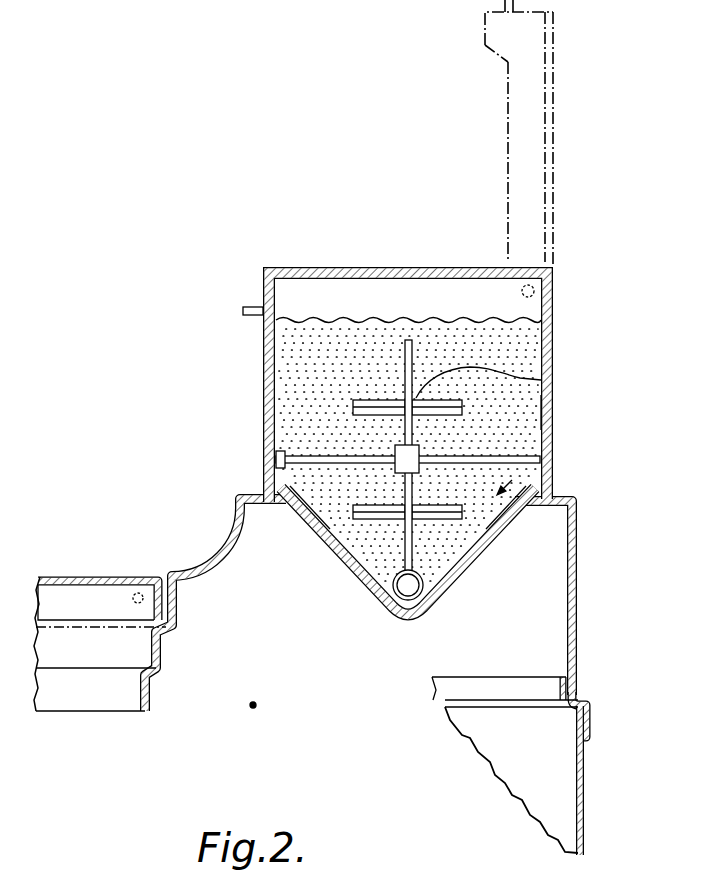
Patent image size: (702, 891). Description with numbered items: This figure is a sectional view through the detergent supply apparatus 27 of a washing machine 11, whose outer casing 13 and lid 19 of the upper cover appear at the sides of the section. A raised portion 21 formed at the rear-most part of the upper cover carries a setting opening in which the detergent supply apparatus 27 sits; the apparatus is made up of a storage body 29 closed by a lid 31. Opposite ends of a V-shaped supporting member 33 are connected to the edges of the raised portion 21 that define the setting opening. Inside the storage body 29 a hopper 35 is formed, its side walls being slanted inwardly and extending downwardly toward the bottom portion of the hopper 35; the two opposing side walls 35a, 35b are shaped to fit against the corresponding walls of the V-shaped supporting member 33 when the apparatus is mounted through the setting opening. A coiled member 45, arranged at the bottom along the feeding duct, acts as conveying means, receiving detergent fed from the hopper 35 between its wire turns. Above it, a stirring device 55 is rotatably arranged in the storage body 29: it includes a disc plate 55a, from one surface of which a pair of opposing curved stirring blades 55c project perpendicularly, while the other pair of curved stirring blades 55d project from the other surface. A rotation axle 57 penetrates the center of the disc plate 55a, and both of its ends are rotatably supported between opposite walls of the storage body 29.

The washing machine 11 is at (598, 718).
The outer casing 13 is at (585, 797).
The lid 19 is at (87, 577).
The raised portion 21 is at (558, 493).
The detergent supply apparatus 27 is at (553, 360).
The storage body 29 is at (553, 408).
The lid 31 is at (535, 172).
The V-shaped supporting member 33 is at (323, 537).
The hopper 35 is at (542, 468).
The side wall 35a is at (315, 523).
The side wall 35b is at (498, 535).
The coiled member 45 is at (424, 597).
The stirring device 55 is at (395, 350).
The disc plate 55a is at (541, 380).
The curved stirring blades 55c is at (357, 399).
The curved stirring blades 55d is at (462, 399).
The rotation axle 57 is at (330, 457).